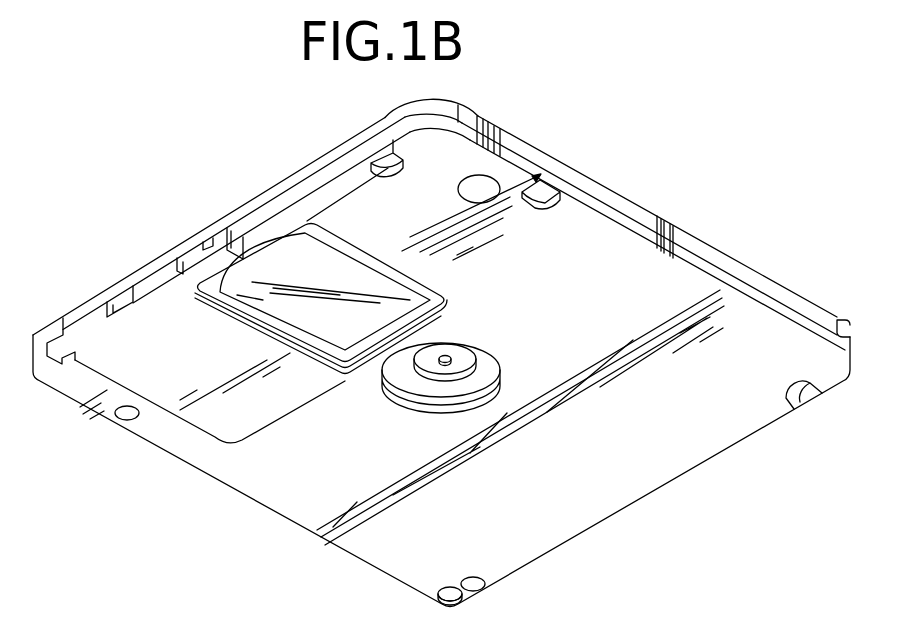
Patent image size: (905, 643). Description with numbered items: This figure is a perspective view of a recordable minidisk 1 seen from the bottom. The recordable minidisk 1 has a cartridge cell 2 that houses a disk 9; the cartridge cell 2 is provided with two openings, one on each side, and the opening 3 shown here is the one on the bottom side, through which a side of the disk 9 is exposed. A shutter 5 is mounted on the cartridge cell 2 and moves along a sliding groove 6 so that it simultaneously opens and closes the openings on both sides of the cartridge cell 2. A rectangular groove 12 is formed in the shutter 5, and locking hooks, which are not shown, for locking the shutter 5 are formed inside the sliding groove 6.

The recordable minidisk 1 is at (217, 165).
The cartridge cell 2 is at (807, 298).
The opening 3 is at (317, 347).
The shutter 5 is at (163, 270).
The sliding groove 6 is at (433, 113).
The disk 9 is at (295, 268).
The rectangular groove 12 is at (120, 296).